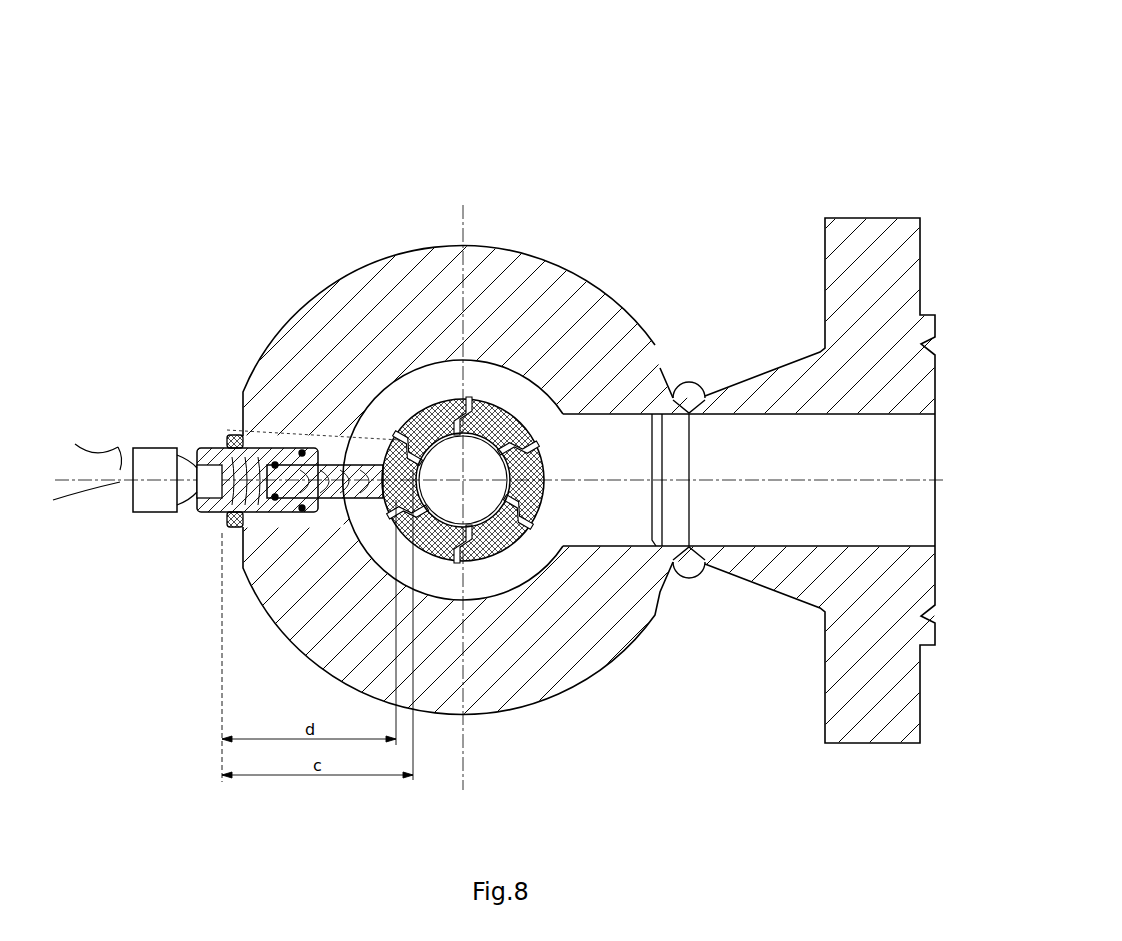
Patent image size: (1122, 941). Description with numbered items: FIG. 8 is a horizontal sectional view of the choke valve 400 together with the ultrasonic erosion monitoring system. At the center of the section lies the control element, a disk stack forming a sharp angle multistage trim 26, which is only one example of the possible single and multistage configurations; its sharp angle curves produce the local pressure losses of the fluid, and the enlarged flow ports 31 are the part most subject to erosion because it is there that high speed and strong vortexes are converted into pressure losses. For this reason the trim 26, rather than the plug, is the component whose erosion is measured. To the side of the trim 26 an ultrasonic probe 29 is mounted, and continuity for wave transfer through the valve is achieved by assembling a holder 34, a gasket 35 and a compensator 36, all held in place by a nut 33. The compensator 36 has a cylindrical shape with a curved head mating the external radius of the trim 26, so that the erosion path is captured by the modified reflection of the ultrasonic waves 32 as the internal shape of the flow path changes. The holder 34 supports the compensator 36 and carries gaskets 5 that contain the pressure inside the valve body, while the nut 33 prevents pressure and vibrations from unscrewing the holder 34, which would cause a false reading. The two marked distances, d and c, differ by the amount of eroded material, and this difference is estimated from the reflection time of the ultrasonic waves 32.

The choke valve 400 is at (733, 149).
The trim 26 is at (537, 522).
The ultrasonic probe 29 is at (190, 492).
The enlarged flow ports 31 is at (445, 477).
The ultrasonic waves 32 is at (455, 432).
The nut 33 is at (187, 447).
The holder 34 is at (255, 512).
The gasket 35 is at (262, 500).
The compensator 36 is at (275, 512).
The gaskets 5 is at (310, 505).